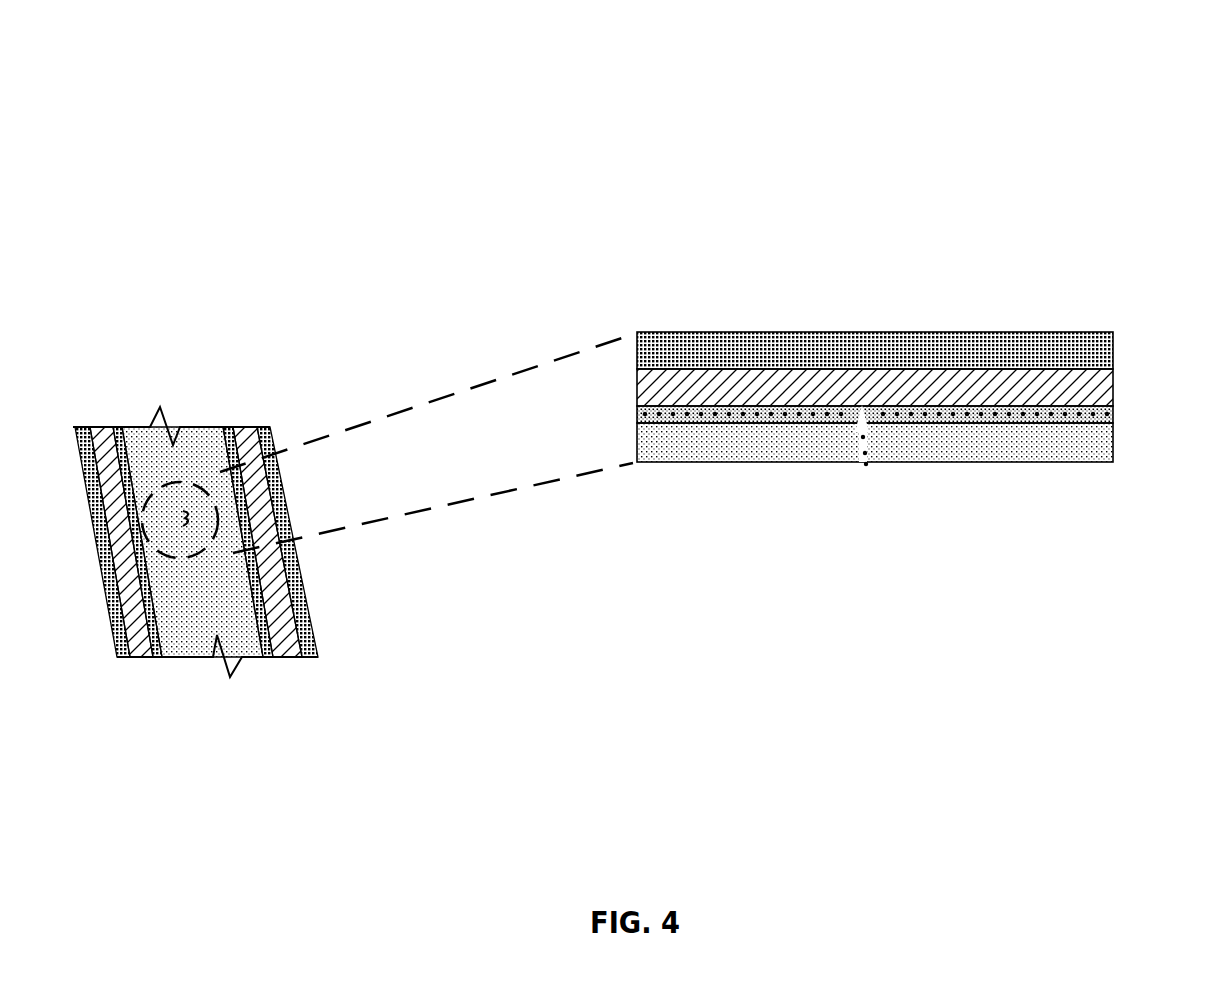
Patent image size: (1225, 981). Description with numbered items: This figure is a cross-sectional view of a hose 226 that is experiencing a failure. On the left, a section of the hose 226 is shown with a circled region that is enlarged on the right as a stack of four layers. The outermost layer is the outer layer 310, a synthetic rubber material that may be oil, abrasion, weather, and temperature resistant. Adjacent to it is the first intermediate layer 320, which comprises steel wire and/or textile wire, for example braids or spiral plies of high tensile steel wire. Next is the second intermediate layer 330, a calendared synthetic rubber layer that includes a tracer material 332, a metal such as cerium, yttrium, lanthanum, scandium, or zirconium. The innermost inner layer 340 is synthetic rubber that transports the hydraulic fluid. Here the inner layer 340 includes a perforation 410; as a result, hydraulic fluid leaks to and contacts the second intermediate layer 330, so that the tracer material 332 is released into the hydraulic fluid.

The hose 226 is at (150, 43).
The outer layer 310 is at (1113, 349).
The first intermediate layer 320 is at (1113, 387).
The second intermediate layer 330 is at (1113, 414).
The tracer material 332 is at (866, 468).
The inner layer 340 is at (1113, 452).
The perforation 410 is at (193, 517).